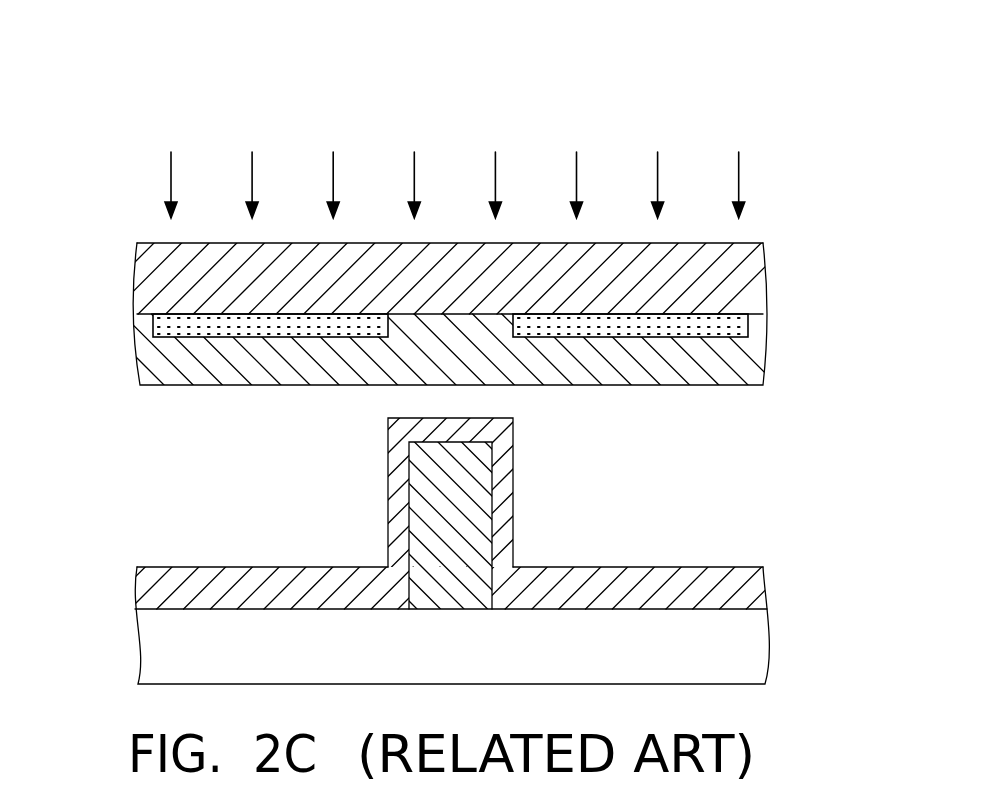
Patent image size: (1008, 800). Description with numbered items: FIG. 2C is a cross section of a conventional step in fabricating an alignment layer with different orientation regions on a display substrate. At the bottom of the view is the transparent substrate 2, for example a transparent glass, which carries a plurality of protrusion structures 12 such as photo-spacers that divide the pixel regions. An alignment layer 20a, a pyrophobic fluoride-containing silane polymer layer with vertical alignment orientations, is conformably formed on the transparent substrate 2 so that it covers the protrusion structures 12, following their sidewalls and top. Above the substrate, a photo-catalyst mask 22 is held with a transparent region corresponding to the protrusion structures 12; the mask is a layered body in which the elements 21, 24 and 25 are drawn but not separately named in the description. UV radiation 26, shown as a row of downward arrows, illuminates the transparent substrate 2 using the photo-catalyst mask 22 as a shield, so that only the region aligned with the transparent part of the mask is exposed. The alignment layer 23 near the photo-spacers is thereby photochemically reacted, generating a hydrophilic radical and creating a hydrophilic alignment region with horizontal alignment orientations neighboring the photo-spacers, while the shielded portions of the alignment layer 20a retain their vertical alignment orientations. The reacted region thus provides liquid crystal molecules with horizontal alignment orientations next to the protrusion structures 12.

The transparent substrate 2 is at (458, 668).
The protrusion structures 12 is at (477, 480).
The alignment layer 20a is at (745, 585).
The transfer substrate 21 is at (750, 358).
The photo-catalyst mask 22 is at (778, 115).
The alignment layer near the photo-spacers 23 is at (388, 469).
The light-absorbing layer 24 is at (154, 323).
The transfer material layer 25 is at (160, 273).
The UV radiation 26 is at (171, 183).